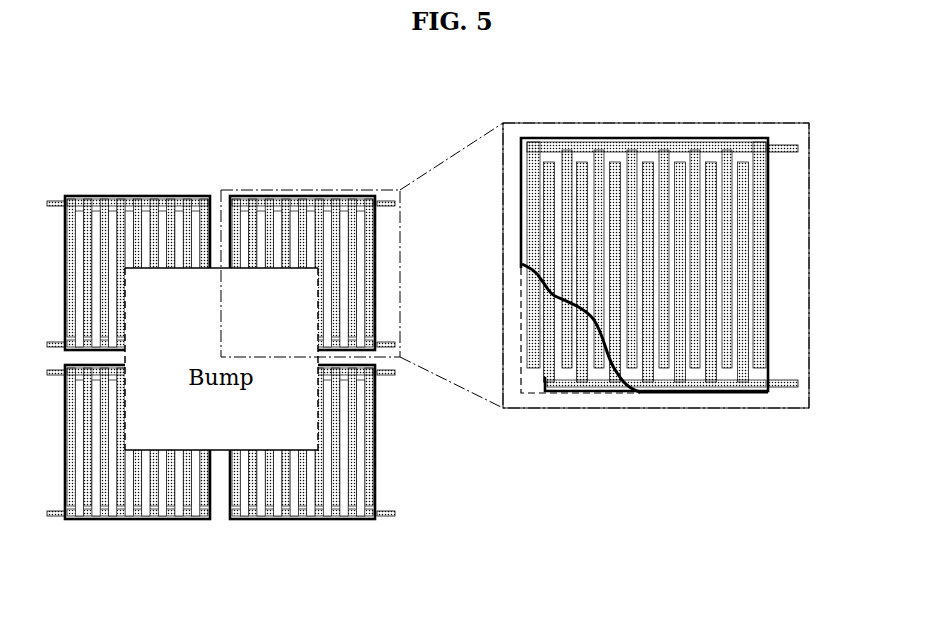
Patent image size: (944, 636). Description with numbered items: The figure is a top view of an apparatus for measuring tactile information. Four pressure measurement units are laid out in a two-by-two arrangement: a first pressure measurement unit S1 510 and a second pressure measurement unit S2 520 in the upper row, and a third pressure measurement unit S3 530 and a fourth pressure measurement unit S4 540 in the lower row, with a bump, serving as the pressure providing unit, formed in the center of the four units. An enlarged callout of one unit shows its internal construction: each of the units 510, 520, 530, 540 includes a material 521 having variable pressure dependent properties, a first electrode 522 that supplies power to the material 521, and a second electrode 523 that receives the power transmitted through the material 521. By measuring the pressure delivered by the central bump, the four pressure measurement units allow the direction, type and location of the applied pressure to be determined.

The first pressure measurement unit S1 510 is at (141, 196).
The second pressure measurement unit S2 520 is at (304, 196).
The third pressure measurement unit S3 530 is at (140, 521).
The fourth pressure measurement unit S4 540 is at (305, 521).
The material having variable pressure dependent properties 521 is at (752, 261).
The first electrode 522 is at (647, 142).
The second electrode 523 is at (583, 385).